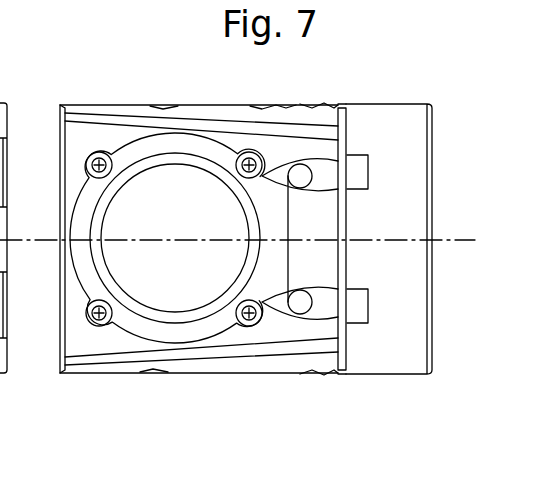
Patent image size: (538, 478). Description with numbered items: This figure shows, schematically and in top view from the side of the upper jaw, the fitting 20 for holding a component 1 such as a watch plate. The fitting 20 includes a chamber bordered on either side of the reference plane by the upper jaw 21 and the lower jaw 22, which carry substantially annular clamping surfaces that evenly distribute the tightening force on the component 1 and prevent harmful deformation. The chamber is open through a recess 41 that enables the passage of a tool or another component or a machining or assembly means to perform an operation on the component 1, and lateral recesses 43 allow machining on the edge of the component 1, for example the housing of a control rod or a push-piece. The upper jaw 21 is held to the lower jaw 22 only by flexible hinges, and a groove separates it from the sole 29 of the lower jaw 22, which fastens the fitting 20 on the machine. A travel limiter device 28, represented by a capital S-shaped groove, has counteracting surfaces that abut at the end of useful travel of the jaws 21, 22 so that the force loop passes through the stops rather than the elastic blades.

The component 1 is at (123, 218).
The fitting 20 is at (28, 120).
The upper jaw 21 is at (110, 134).
The lower jaw 22 is at (295, 106).
The travel limiter device 28 is at (323, 103).
The sole 29 is at (402, 362).
The recess 41 is at (190, 292).
The lateral recess 43 is at (173, 103).